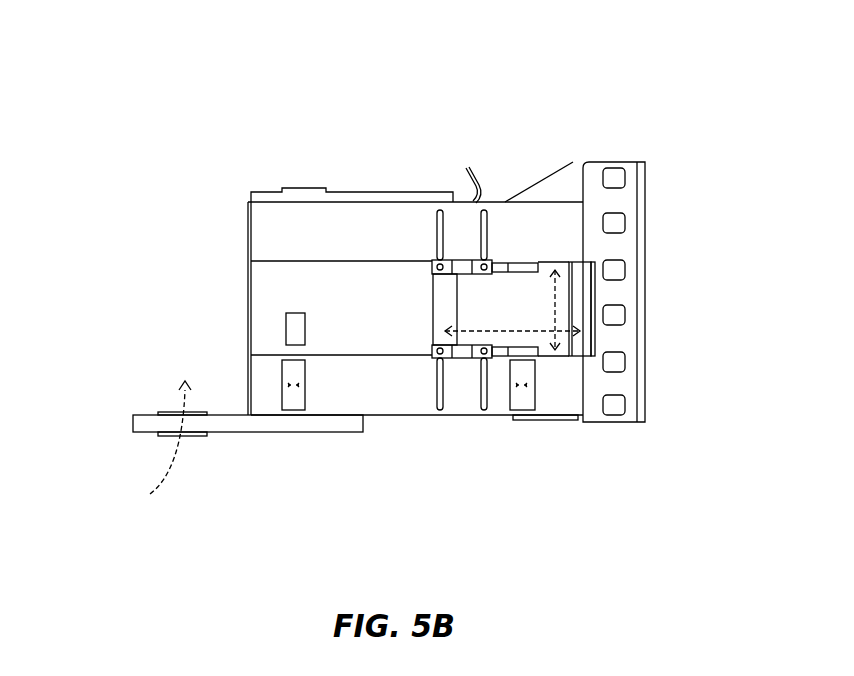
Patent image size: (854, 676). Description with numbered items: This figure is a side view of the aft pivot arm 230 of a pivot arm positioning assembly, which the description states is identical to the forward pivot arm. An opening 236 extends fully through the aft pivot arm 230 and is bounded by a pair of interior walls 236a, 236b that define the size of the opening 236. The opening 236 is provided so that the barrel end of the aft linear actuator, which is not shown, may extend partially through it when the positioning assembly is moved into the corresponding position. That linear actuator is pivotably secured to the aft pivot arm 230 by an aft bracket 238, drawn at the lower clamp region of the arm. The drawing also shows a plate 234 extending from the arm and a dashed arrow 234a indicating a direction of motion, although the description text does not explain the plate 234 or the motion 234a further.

The aft pivot arm 230 is at (388, 262).
The mounting plate 234 is at (147, 412).
The plate pivot direction 234a is at (141, 445).
The opening 236 is at (512, 310).
The interior wall 236a is at (443, 300).
The interior wall 236b is at (583, 299).
The aft bracket 238 is at (462, 358).